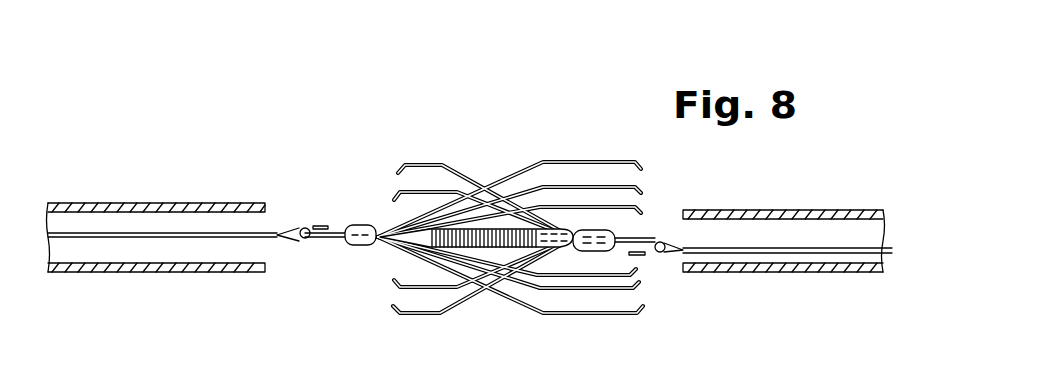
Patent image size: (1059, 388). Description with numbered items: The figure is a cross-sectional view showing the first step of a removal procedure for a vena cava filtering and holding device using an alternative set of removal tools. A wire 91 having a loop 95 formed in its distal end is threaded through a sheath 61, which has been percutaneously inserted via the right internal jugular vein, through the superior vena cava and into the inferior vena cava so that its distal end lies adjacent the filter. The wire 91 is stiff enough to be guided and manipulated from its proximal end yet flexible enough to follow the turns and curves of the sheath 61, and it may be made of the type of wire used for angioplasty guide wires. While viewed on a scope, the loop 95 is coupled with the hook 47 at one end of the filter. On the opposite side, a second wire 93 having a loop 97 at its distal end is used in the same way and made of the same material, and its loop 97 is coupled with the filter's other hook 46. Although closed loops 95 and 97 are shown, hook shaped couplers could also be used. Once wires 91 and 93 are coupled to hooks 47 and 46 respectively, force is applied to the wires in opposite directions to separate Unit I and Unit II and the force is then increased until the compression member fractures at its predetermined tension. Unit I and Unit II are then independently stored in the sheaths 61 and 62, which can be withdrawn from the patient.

The sheath 61 is at (235, 272).
The sheath 62 is at (790, 272).
The wire 91 is at (163, 233).
The second wire 93 is at (782, 243).
The loop 95 is at (291, 227).
The loop 97 is at (670, 238).
The hook 47 is at (323, 225).
The hook 46 is at (644, 256).
The Unit I is at (592, 257).
The Unit II is at (342, 253).